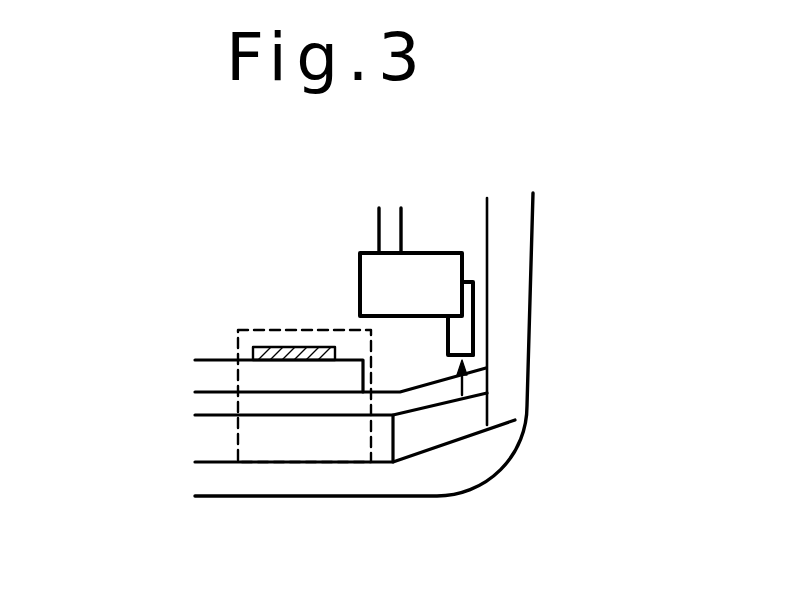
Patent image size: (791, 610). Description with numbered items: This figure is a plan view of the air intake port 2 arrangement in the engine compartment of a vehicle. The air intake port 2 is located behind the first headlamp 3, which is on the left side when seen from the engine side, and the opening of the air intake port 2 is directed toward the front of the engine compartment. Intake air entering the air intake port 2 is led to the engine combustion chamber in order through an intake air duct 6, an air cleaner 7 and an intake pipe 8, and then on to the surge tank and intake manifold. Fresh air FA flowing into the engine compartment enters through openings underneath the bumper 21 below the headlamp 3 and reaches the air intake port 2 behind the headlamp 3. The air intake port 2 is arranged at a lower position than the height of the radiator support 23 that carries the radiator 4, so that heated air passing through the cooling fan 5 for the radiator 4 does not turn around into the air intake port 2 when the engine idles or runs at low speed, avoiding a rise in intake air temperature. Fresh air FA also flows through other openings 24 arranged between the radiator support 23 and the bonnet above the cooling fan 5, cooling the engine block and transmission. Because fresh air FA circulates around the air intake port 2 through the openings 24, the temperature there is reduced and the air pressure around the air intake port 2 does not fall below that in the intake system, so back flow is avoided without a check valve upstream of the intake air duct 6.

The air intake port 2 is at (475, 352).
The first headlamp 3 is at (457, 427).
The radiator 4 is at (200, 360).
The cooling fan 5 is at (270, 348).
The intake air duct 6 is at (472, 317).
The air cleaner 7 is at (450, 253).
The intake pipe 8 is at (378, 222).
The bumper 21 is at (378, 484).
The radiator support 23 is at (277, 410).
The openings 24 is at (337, 330).
The fresh air FA is at (490, 388).